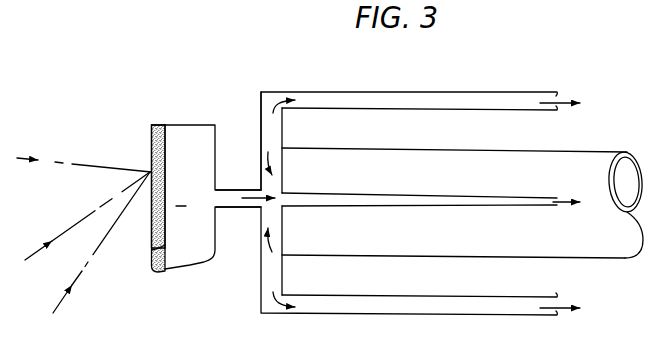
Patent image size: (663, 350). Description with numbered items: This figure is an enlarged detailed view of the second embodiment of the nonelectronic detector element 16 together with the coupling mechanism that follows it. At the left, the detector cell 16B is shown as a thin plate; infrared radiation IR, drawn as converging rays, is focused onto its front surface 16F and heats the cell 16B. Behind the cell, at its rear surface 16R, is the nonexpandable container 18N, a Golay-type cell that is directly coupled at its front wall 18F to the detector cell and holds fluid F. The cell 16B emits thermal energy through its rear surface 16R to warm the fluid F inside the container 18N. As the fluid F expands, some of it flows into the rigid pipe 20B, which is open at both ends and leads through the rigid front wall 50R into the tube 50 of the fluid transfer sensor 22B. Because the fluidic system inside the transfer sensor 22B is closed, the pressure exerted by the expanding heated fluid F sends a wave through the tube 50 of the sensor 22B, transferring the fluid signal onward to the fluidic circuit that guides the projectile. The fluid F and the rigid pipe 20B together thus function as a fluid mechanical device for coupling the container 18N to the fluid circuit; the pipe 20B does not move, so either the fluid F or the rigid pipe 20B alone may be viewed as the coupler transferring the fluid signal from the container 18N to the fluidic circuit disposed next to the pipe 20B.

The nonelectronic detector element 16 is at (150, 155).
The front surface 16F is at (152, 132).
The detector cell 16B is at (155, 125).
The rear surface 16R is at (165, 138).
The nonexpandable container 18N is at (193, 132).
The front wall 18F is at (150, 255).
The rigid pipe 20B is at (223, 187).
The fluid transfer sensor 22B is at (556, 152).
The tube 50 is at (272, 92).
The rigid front wall 50R is at (261, 94).
The infrared radiation IR is at (73, 165).
The fluid F is at (252, 200).